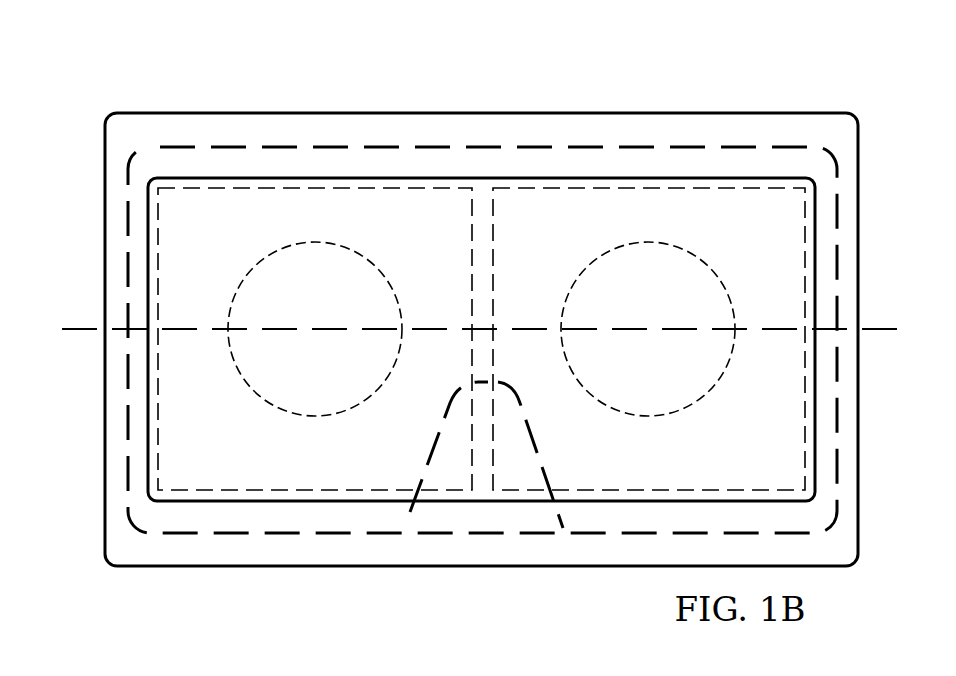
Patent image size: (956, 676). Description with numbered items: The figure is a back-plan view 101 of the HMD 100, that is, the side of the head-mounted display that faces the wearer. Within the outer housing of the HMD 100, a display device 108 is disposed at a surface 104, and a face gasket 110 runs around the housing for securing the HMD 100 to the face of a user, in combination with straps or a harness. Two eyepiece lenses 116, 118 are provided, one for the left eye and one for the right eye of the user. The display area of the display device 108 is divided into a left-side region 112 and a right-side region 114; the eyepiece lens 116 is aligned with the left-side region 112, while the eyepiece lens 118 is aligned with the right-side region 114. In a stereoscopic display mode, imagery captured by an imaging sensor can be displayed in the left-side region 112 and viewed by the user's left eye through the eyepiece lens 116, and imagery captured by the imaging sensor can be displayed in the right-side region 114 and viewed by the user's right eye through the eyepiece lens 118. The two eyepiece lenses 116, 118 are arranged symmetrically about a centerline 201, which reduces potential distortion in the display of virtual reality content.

The HMD 100 is at (646, 112).
The back-plan view 101 is at (244, 92).
The surface 104 is at (166, 551).
The display device 108 is at (455, 177).
The face gasket 110 is at (285, 537).
The left-side region 112 is at (444, 482).
The right-side region 114 is at (522, 480).
The eyepiece lens 116 is at (282, 250).
The eyepiece lens 118 is at (673, 247).
The centerline 201 is at (80, 327).